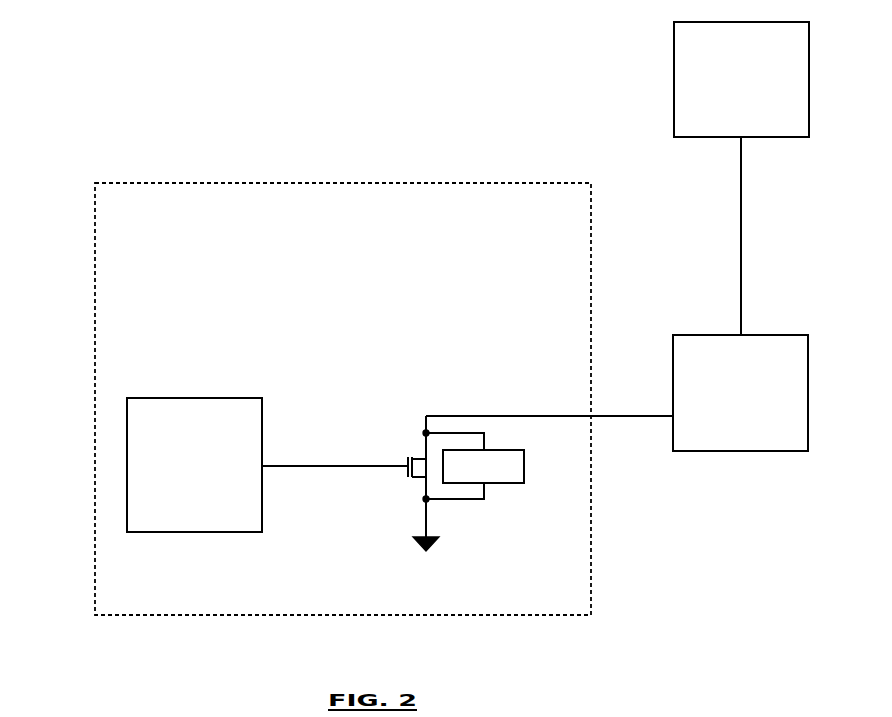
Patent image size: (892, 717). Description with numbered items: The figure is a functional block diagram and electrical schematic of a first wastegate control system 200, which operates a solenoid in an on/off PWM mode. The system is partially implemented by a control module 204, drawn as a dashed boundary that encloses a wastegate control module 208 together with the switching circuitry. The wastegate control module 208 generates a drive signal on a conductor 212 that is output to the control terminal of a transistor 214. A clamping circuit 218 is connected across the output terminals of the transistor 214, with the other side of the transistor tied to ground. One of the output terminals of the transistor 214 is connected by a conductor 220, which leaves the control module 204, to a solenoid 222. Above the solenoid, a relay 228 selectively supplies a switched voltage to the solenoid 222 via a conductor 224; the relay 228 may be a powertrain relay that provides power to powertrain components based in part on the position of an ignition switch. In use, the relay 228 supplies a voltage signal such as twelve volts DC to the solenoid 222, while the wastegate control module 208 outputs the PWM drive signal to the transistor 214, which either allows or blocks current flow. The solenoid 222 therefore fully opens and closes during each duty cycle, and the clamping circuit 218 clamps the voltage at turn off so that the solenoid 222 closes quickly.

The first wastegate control system 200 is at (95, 100).
The control module 204 is at (225, 182).
The wastegate control module 208 is at (192, 397).
The conductor 212 is at (338, 465).
The transistor 214 is at (399, 478).
The clamping circuit 218 is at (498, 484).
The conductor 220 is at (600, 418).
The solenoid 222 is at (742, 452).
The conductor 224 is at (742, 237).
The relay 228 is at (793, 138).